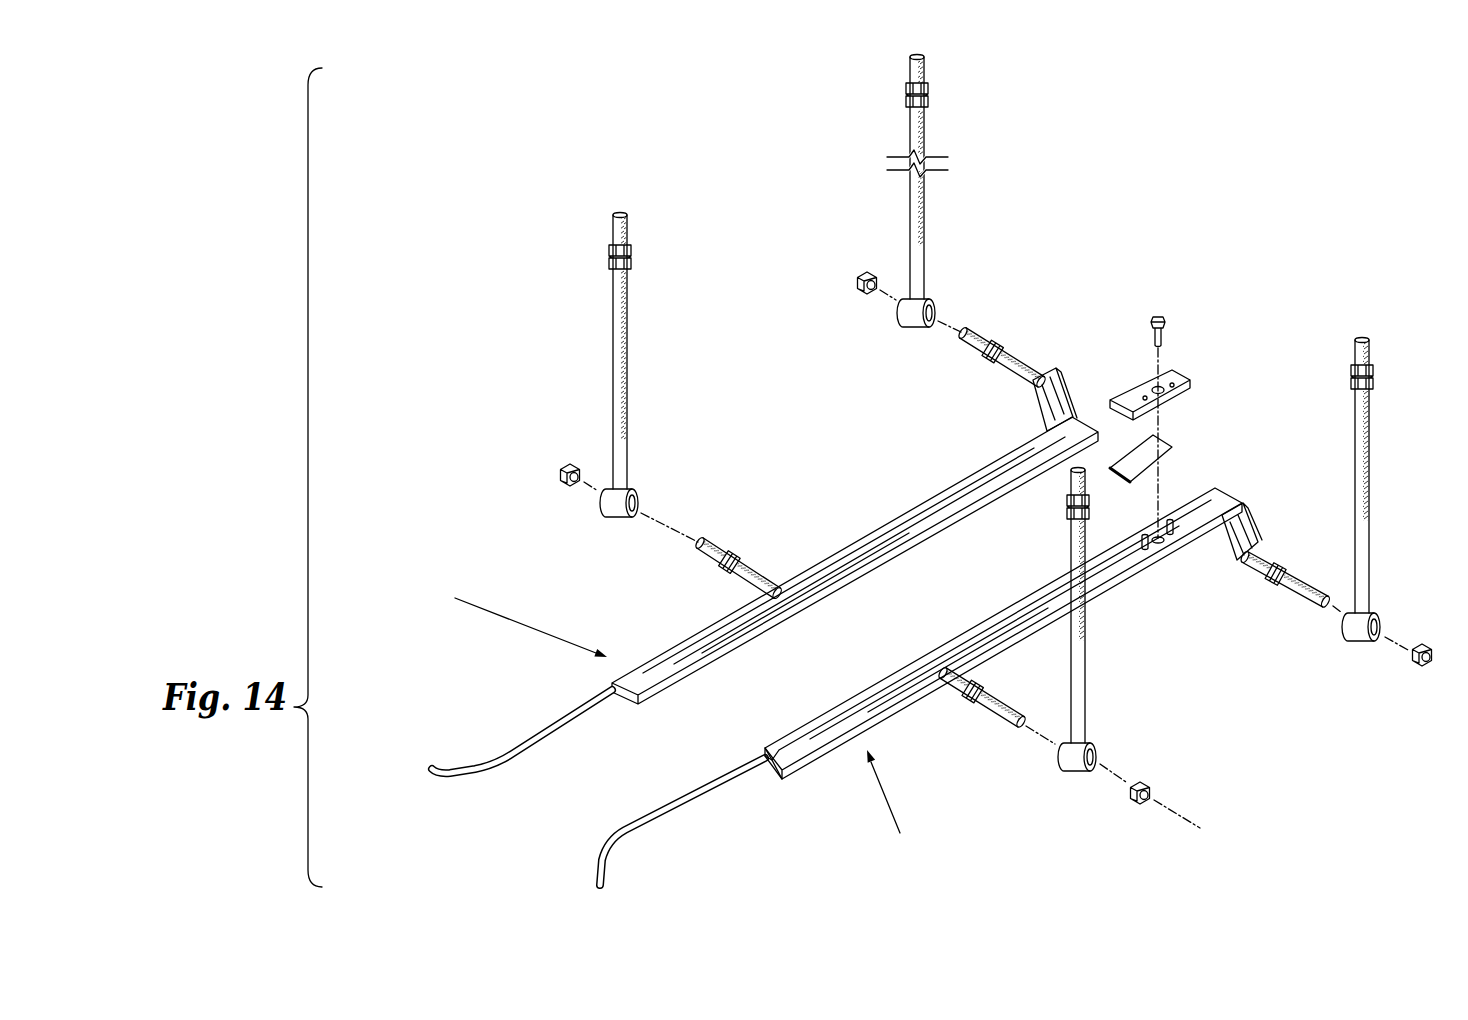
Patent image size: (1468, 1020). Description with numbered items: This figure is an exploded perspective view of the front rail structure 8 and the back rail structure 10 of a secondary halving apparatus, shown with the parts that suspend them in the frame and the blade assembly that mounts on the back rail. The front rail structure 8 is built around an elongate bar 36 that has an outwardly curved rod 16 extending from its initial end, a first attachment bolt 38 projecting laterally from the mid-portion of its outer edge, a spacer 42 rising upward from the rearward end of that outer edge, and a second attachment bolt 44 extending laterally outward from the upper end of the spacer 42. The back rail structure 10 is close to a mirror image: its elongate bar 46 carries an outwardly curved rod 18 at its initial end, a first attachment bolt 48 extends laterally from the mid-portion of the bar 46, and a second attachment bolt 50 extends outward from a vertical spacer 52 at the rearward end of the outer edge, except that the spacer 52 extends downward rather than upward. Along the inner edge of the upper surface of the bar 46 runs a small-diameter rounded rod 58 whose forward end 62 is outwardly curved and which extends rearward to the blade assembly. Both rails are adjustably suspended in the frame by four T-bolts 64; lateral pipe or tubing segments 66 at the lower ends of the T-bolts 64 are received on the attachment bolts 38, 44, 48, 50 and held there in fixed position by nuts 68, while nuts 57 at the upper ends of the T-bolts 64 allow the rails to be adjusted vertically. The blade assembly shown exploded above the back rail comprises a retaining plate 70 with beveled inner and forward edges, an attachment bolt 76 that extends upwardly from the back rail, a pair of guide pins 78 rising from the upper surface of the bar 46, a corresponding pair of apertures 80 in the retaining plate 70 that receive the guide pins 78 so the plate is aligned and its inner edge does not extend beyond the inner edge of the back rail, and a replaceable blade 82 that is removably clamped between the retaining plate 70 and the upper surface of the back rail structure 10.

The front rail structure 8 is at (515, 619).
The back rail structure 10 is at (893, 807).
The outwardly curved rod 16 is at (510, 760).
The outwardly curved rod 18 is at (690, 813).
The elongate bar 36 is at (975, 485).
The first attachment bolt 38 is at (760, 570).
The spacer 42 is at (1057, 370).
The second attachment bolt 44 is at (1010, 370).
The elongate bar 46 is at (1008, 627).
The first attachment bolt 48 is at (990, 720).
The second attachment bolt 50 is at (1312, 608).
The vertical spacer 52 is at (1250, 528).
The nuts 57 is at (612, 243).
The rounded rod 58 is at (870, 682).
The outwardly curved forward end 62 is at (762, 765).
The T-bolts 64 is at (618, 345).
The lateral pipe or tubing segments 66 is at (610, 520).
The nuts 68 is at (555, 475).
The retaining plate 70 is at (1170, 372).
The attachment bolt 76 is at (1162, 318).
The guide pins 78 is at (1172, 538).
The apertures 80 is at (1145, 396).
The replaceable blade 82 is at (1165, 445).